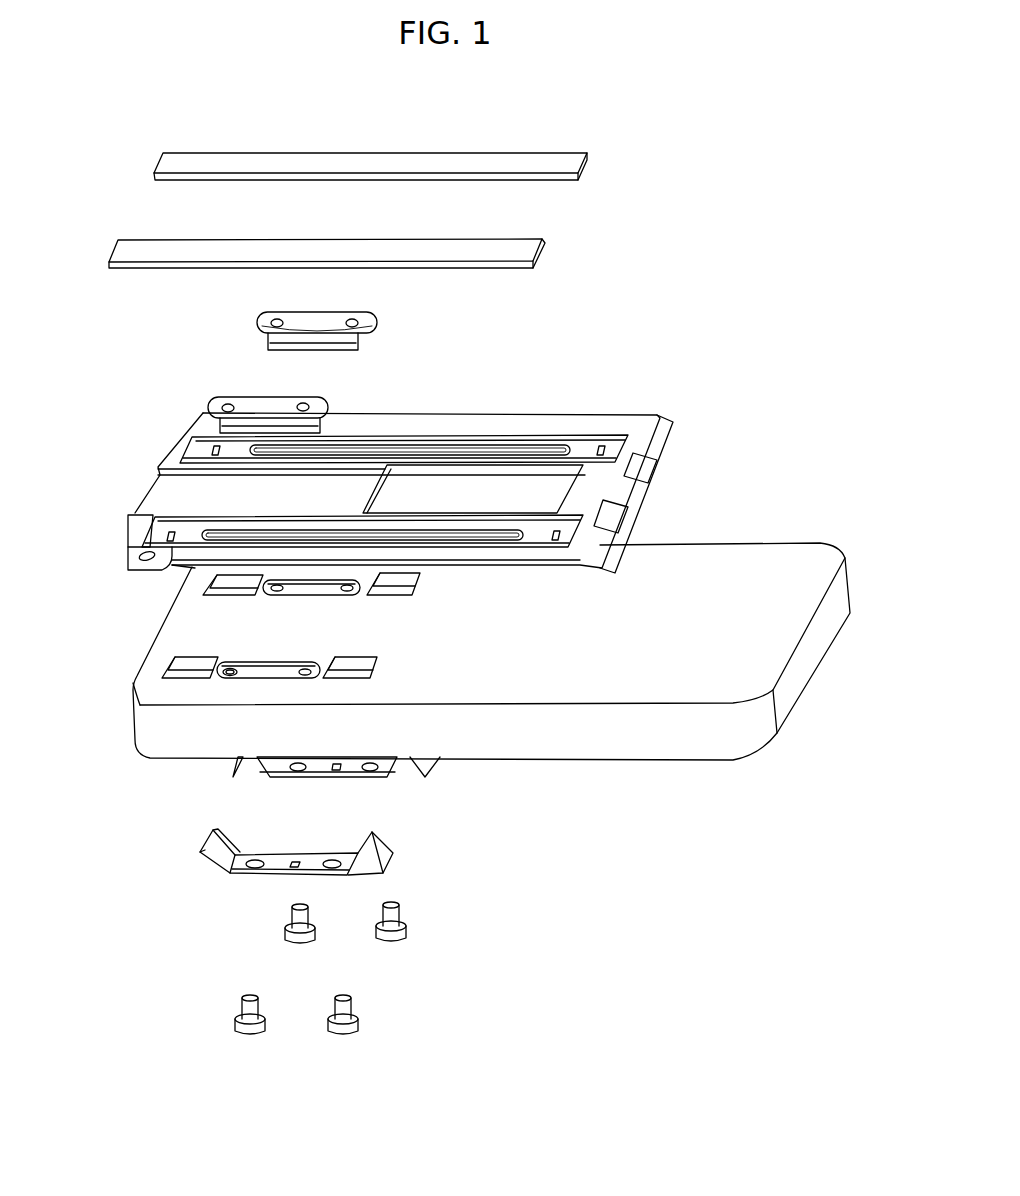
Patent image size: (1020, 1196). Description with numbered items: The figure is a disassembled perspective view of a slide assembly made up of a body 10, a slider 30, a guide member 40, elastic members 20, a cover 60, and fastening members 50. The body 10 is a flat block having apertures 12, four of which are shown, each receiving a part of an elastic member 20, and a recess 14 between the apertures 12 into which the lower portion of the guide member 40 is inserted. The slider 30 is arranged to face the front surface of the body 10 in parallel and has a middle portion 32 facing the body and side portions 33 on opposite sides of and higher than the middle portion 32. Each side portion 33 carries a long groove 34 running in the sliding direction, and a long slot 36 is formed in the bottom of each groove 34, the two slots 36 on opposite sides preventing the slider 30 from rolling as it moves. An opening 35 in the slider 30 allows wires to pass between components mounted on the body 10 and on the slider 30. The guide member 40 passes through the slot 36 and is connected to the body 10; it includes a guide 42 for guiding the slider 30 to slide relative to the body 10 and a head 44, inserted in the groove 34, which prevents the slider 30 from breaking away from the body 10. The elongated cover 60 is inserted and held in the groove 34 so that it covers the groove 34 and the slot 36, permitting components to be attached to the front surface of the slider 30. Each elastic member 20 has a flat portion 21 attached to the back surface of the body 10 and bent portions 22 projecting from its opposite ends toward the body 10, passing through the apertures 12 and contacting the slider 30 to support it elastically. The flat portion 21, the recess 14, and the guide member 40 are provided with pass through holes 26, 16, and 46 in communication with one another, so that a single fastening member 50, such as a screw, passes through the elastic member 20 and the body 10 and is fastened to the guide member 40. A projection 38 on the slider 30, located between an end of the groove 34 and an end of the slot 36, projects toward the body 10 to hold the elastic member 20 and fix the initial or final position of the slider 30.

The body 10 is at (453, 622).
The aperture 12 is at (163, 667).
The recess 14 is at (188, 677).
The pass through hole 16 is at (230, 660).
The elastic member 20 is at (250, 882).
The flat portion 21 is at (315, 862).
The bent portion 22 is at (193, 852).
The pass through hole 26 is at (257, 862).
The slider 30 is at (364, 477).
The middle portion 32 is at (160, 493).
The side portion 33 is at (375, 406).
The long groove 34 is at (163, 528).
The opening 35 is at (500, 503).
The long slot 36 is at (557, 450).
The projection 38 is at (212, 450).
The guide member 40 is at (292, 352).
The guide 42 is at (353, 312).
The head 44 is at (260, 402).
The pass through hole 46 is at (360, 321).
The fastening member 50 is at (395, 933).
The cover 60 is at (568, 163).